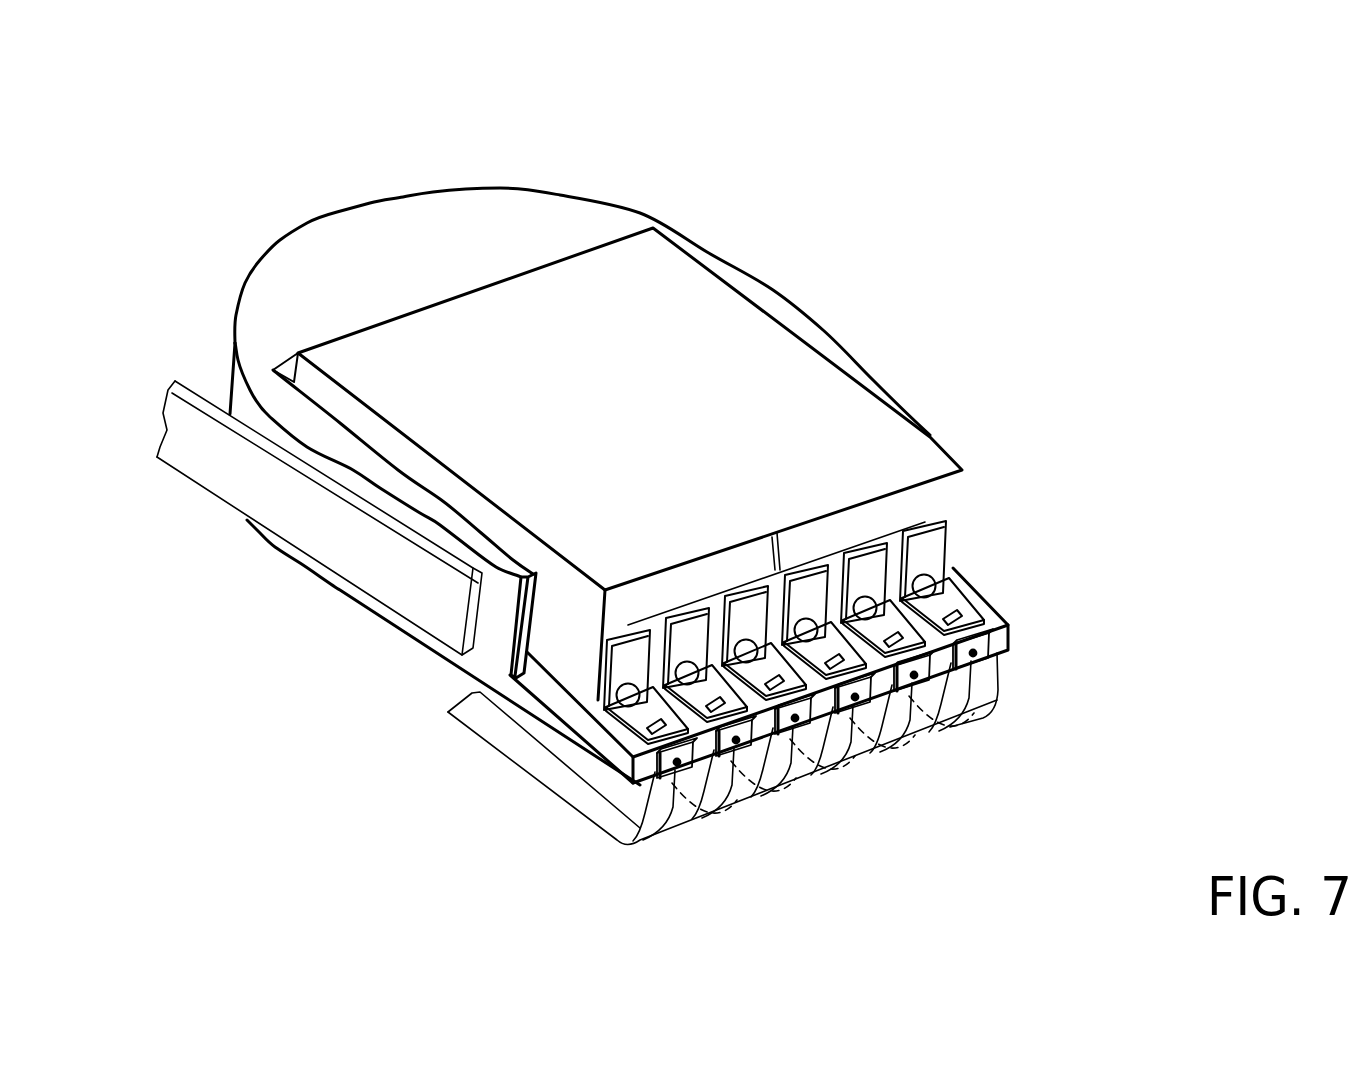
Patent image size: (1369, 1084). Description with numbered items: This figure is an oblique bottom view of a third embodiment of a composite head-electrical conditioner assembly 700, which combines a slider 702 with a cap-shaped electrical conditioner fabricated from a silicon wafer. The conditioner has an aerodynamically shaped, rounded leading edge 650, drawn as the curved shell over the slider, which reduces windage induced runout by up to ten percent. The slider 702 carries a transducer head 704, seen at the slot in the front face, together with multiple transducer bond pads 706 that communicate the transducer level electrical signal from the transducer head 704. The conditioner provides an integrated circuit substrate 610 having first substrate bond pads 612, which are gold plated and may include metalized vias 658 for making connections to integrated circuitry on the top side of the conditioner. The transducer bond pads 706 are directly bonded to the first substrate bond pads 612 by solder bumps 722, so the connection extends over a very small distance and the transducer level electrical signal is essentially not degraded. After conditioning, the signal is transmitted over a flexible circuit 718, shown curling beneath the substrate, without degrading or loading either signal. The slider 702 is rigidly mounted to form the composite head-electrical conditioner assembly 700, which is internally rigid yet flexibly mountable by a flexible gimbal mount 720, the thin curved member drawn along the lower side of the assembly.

The composite head-electrical conditioner assembly 700 is at (1105, 338).
The leading edge 650 is at (262, 197).
The integrated circuit substrate 610 is at (780, 283).
The slider 702 is at (634, 426).
The transducer head 704 is at (778, 532).
The transducer bond pads 706 is at (952, 562).
The solder bumps 722 is at (945, 578).
The first substrate bond pads 612 is at (975, 587).
The metalized vias 658 is at (980, 618).
The flexible circuit 718 is at (1000, 698).
The flexible gimbal mount 720 is at (333, 573).